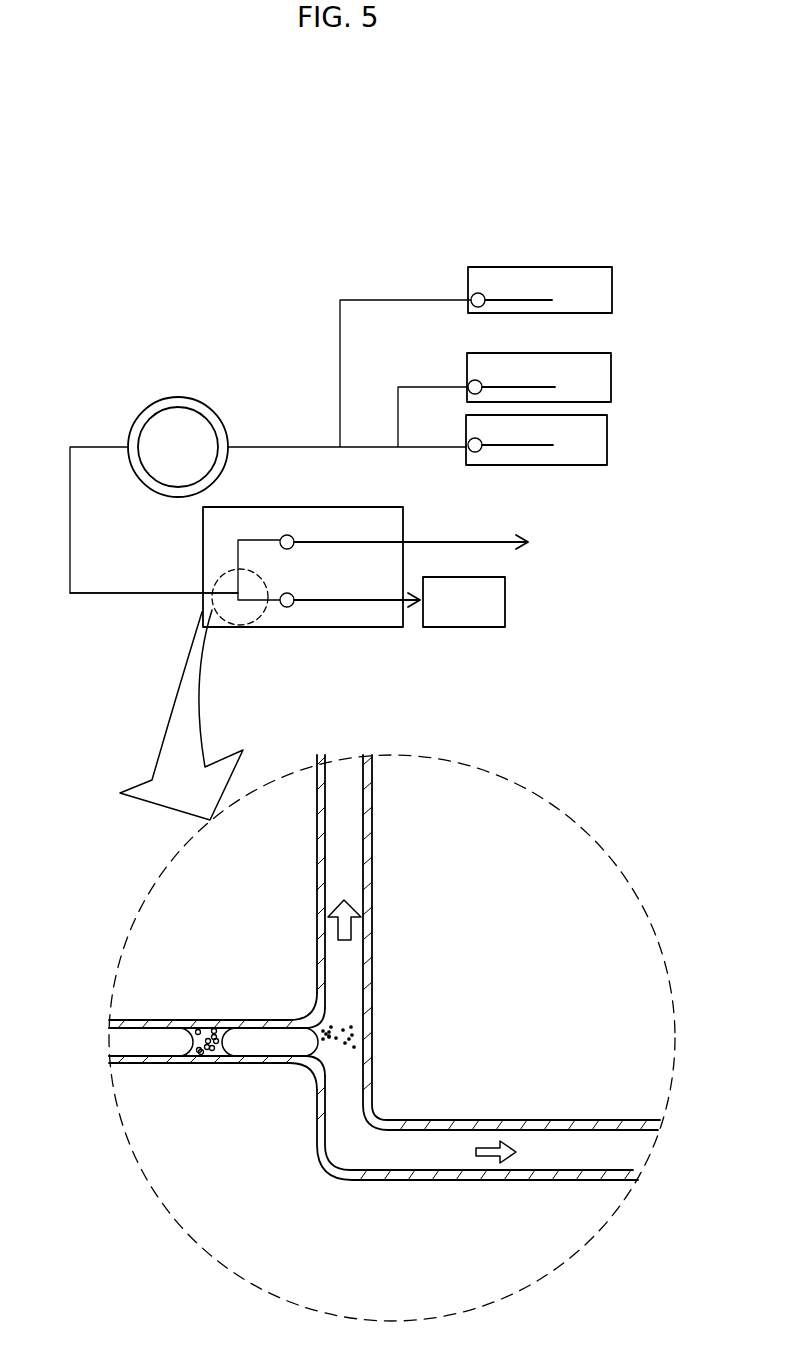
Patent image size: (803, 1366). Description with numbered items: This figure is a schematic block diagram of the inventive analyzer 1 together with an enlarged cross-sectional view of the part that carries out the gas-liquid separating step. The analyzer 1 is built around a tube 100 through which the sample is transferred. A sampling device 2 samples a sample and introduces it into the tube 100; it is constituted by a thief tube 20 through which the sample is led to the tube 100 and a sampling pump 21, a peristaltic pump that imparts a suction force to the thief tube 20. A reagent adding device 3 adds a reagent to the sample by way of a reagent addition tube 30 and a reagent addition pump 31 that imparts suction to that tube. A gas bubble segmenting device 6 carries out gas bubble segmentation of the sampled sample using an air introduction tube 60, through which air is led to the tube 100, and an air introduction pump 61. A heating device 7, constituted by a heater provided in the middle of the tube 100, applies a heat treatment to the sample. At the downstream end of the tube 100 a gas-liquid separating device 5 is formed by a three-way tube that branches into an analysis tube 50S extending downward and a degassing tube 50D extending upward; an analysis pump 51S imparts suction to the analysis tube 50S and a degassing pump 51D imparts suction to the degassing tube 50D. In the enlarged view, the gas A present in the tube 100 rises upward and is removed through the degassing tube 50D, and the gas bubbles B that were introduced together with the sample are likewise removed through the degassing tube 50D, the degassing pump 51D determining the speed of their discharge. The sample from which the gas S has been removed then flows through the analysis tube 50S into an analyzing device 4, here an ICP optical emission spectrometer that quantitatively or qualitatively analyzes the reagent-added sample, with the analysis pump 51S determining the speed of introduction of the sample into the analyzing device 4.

The analyzer 1 is at (570, 154).
The sampling device 2 is at (606, 422).
The reagent adding device 3 is at (612, 274).
The analyzing device 4 is at (440, 583).
The gas-liquid separating device 5 is at (403, 514).
The gas bubble segmenting device 6 is at (610, 361).
The heating device 7 is at (187, 400).
The thief tube 20 is at (516, 445).
The sampling pump 21 is at (482, 443).
The reagent addition tube 30 is at (518, 300).
The reagent addition pump 31 is at (485, 298).
The air introduction tube 60 is at (516, 387).
The air introduction pump 61 is at (482, 385).
The degassing tube 50D is at (347, 541).
The degassing pump 51D is at (296, 541).
The analysis tube 50S is at (341, 599).
The analysis pump 51S is at (296, 599).
The tube 100 is at (141, 593).
The gas S is at (208, 1048).
The gas A is at (198, 1056).
The gas bubbles B is at (178, 1046).